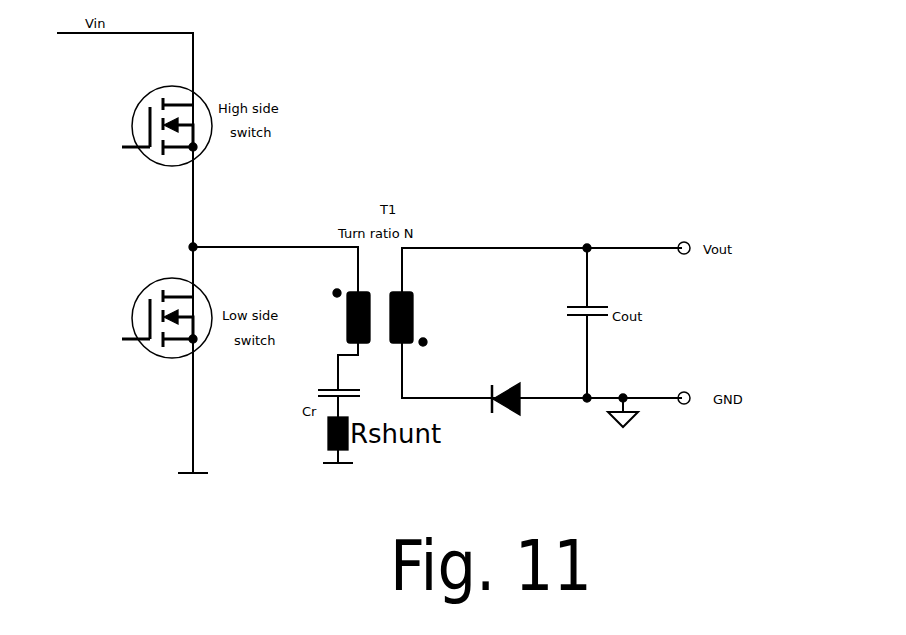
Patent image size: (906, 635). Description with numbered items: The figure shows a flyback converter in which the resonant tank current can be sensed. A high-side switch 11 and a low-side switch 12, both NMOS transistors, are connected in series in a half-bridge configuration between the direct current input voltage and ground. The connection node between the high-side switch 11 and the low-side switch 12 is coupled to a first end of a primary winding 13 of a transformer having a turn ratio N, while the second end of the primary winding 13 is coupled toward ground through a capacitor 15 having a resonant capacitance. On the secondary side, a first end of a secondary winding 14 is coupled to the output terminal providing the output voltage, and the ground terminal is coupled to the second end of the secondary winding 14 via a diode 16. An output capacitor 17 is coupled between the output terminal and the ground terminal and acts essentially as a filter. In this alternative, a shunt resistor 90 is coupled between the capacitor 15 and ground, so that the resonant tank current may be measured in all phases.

The high-side switch 11 is at (140, 102).
The low-side switch 12 is at (133, 298).
The primary winding 13 is at (343, 323).
The secondary winding 14 is at (413, 313).
The capacitor 15 is at (318, 388).
The diode 16 is at (515, 383).
The output capacitor 17 is at (595, 305).
The shunt resistor 90 is at (328, 430).